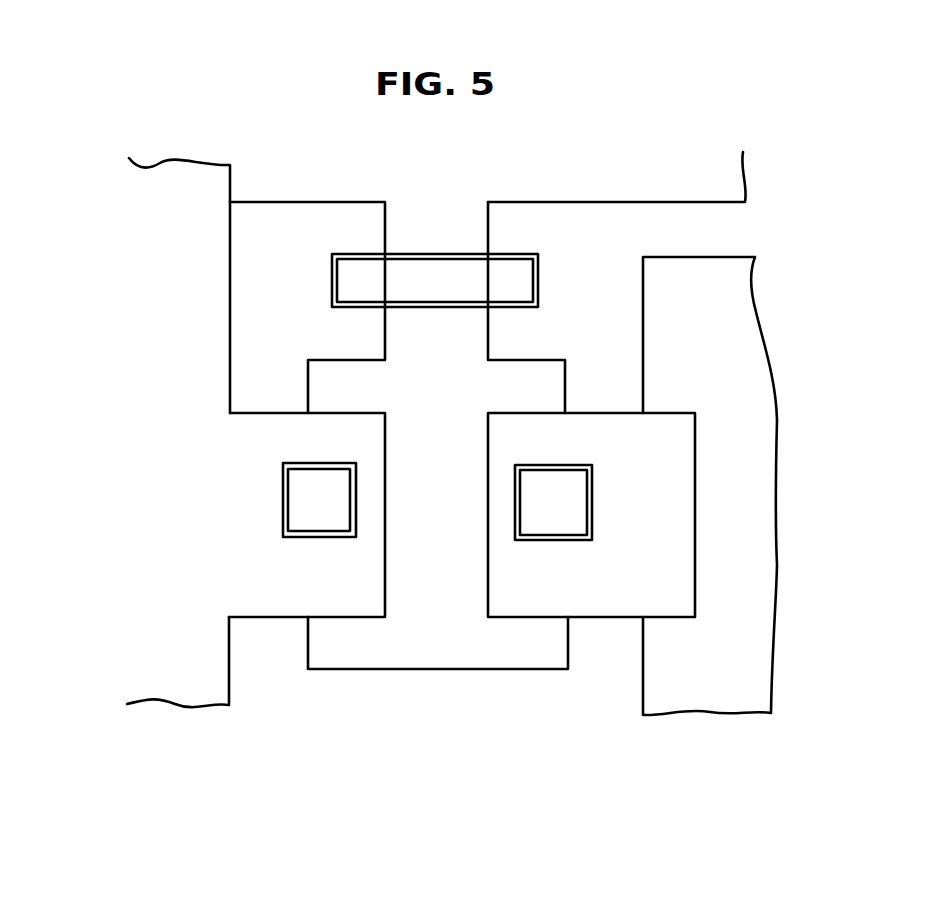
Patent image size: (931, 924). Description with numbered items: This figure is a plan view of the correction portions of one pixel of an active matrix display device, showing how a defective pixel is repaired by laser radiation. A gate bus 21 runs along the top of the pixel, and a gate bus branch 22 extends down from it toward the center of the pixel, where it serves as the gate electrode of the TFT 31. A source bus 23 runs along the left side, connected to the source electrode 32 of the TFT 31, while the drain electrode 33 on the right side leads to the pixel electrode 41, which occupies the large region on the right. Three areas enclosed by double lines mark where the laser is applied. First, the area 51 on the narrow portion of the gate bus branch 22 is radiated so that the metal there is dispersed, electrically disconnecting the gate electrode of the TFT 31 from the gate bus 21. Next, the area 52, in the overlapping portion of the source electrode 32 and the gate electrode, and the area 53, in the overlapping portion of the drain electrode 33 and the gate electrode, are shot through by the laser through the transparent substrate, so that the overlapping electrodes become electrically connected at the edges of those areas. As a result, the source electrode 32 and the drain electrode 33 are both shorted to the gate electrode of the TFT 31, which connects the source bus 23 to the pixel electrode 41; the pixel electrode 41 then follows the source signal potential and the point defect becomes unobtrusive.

The gate bus 21 is at (601, 192).
The gate bus branch 22 is at (466, 360).
The source bus 23 is at (209, 695).
The TFT 31 is at (432, 535).
The source electrode 32 is at (323, 442).
The drain electrode 33 is at (602, 613).
The pixel electrode 41 is at (772, 403).
The area enclosed by a double line 51 is at (522, 282).
The area enclosed by a double line 52 is at (303, 511).
The area enclosed by a double line 53 is at (582, 512).